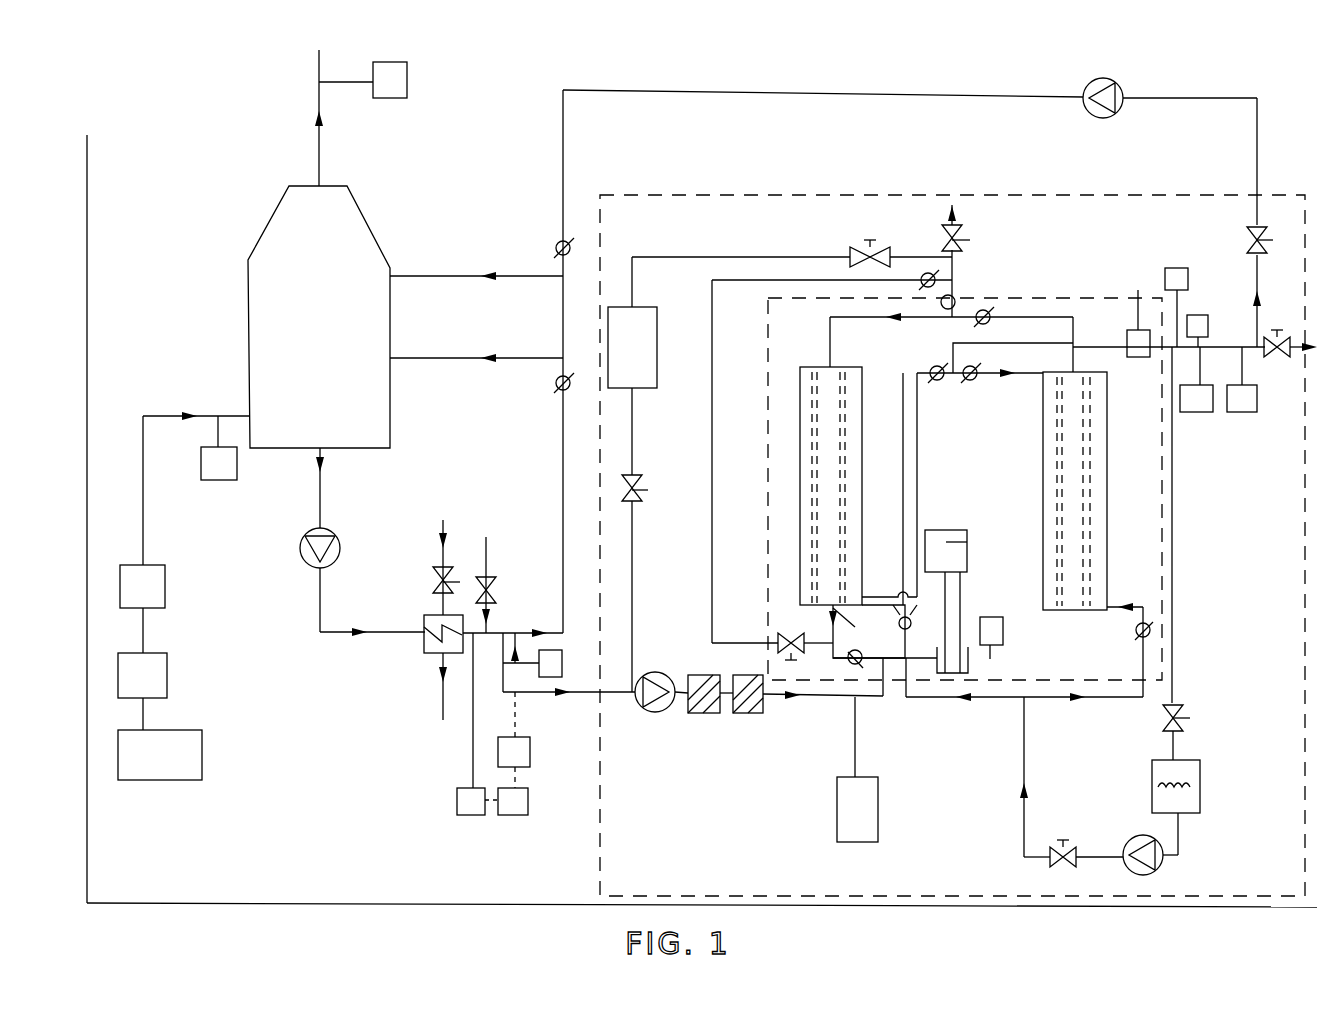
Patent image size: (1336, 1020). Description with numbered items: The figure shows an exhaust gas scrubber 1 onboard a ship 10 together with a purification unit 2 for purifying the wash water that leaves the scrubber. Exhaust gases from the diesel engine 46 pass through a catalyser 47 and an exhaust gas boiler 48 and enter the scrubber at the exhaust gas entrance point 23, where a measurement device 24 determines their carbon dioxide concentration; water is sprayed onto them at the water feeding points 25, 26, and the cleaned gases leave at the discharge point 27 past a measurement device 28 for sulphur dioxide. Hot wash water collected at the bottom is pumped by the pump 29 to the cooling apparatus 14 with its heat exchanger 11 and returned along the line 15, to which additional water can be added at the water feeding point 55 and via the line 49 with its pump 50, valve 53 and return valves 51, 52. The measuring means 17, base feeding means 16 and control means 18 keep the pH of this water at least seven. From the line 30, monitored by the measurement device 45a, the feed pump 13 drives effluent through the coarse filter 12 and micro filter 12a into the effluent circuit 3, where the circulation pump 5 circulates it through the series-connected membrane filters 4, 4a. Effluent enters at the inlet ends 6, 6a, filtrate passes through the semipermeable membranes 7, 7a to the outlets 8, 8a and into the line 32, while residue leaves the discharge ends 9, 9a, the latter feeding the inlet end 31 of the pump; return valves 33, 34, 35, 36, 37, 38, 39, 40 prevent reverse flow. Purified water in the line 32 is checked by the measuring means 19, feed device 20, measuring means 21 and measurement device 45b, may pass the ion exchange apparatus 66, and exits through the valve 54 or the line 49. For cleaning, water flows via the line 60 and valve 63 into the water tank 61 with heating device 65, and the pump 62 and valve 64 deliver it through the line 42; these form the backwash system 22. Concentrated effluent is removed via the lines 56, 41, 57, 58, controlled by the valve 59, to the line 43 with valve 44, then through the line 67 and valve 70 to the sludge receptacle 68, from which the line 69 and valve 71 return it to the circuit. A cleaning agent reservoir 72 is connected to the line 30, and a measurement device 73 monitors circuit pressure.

The exhaust gas scrubber 1 is at (384, 192).
The purification unit 2 is at (745, 194).
The effluent circuit 3 is at (1057, 296).
The membrane filter 4 is at (1107, 430).
The membrane filter 4a is at (800, 425).
The circulation pump 5 is at (940, 530).
The inlet end of the membrane filter 4 6 is at (1078, 615).
The inlet end of the membrane filter 4a 6a is at (830, 360).
The semipermeable membrane 7 is at (1087, 478).
The semipermeable membrane 7a is at (810, 460).
The outlet of the membrane filter 4 8 is at (1042, 378).
The outlet of the membrane filter 4a 8a is at (863, 600).
The discharge end of membrane filter 4 9 is at (1080, 365).
The discharge end of the membrane filter 4a 9a is at (883, 631).
The ship 10 is at (87, 203).
The heat exchanger 11 is at (425, 623).
The coarse filter 12 is at (705, 713).
The micro filter 12a is at (752, 713).
The feed pump 13 is at (652, 713).
The cooling apparatus 14 is at (420, 594).
The line 15 is at (517, 277).
The base feeding means 16 is at (530, 757).
The measuring means 17 is at (457, 800).
The control means 18 is at (528, 808).
The measuring means 19 is at (1199, 315).
The feed device 20 is at (1240, 412).
The measuring means 21 is at (1172, 268).
The backwash system 22 is at (1208, 732).
The exhaust gas entrance point 23 is at (250, 416).
The measurement device 24 is at (217, 483).
The water feeding point 25 is at (395, 270).
The water feeding point 26 is at (393, 356).
The discharge point of purified exhaust gases 27 is at (320, 186).
The measurement device 28 is at (407, 82).
The pump 29 is at (310, 567).
The line 30 is at (590, 697).
The inlet end of the circulation pump 31 is at (952, 680).
The line 32 is at (983, 345).
The return valve 33 is at (930, 365).
The return valve 34 is at (970, 381).
The return valve 35 is at (852, 665).
The return valve 36 is at (957, 300).
The return valve 37 is at (898, 632).
The return valve 38 is at (1148, 623).
The return valve 39 is at (922, 272).
The return valve 40 is at (995, 310).
The line 41 is at (862, 318).
The line 42 is at (995, 700).
The line 43 is at (956, 213).
The valve 44 is at (962, 240).
The measurement device 45a is at (562, 663).
The measurement device 45b is at (1195, 412).
The diesel engine 46 is at (202, 758).
The catalyser 47 is at (167, 675).
The exhaust gas boiler 48 is at (165, 590).
The line 49 is at (455, 270).
The pump 50 is at (1120, 80).
The return valve 51 is at (553, 392).
The return valve 52 is at (558, 243).
The valve 53 is at (1250, 242).
The valve 54 is at (1278, 360).
The water feeding point 55 is at (490, 625).
The line 56 is at (1075, 330).
The line 57 is at (818, 622).
The line 58 is at (707, 490).
The valve 59 is at (778, 640).
The line 60 is at (1172, 555).
The water tank 61 is at (1200, 775).
The pump 62 is at (1160, 870).
The valve 63 is at (1180, 710).
The valve 64 is at (1067, 842).
The heating device 65 is at (1180, 790).
The ion exchange apparatus 66 is at (1134, 305).
The line 67 is at (690, 258).
The sludge receptacle 68 is at (657, 333).
The line 69 is at (632, 437).
The valve 70 is at (850, 250).
The valve 71 is at (638, 482).
The cleaning agent reservoir 72 is at (837, 818).
The measurement device 73 is at (990, 617).